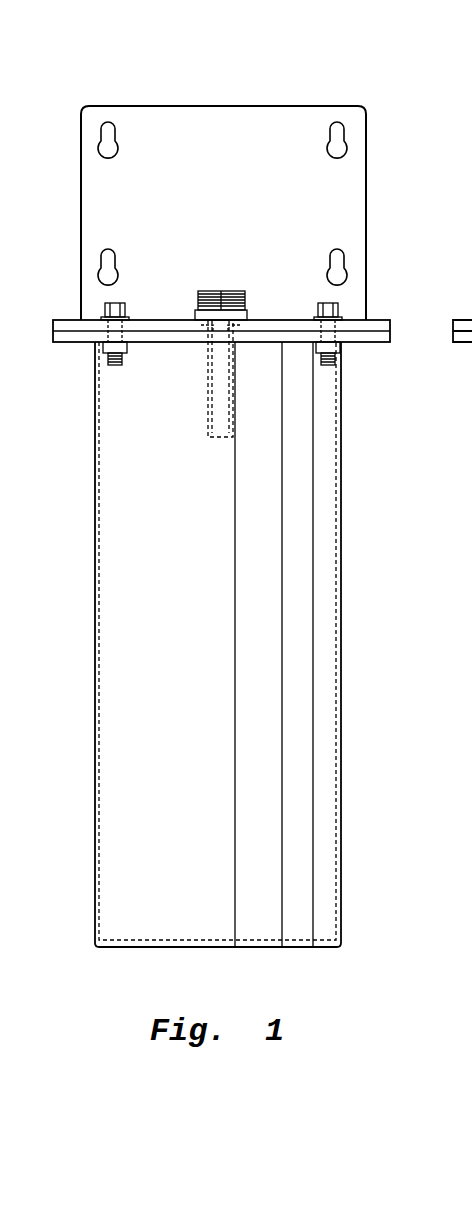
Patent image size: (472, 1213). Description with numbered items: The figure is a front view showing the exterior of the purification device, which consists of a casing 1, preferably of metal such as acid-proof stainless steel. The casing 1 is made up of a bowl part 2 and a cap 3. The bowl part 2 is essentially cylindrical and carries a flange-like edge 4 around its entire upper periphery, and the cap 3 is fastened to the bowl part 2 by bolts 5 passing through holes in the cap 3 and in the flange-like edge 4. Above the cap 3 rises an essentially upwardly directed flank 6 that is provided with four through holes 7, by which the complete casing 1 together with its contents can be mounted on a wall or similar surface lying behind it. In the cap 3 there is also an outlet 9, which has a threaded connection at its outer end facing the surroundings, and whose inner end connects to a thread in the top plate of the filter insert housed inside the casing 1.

The casing 1 is at (380, 231).
The bowl part 2 is at (298, 473).
The cap 3 is at (298, 145).
The flange-like edge 4 is at (88, 337).
The bolts 5 is at (108, 304).
The flank 6 is at (172, 130).
The through holes 7 is at (337, 150).
The outlet 9 is at (220, 297).